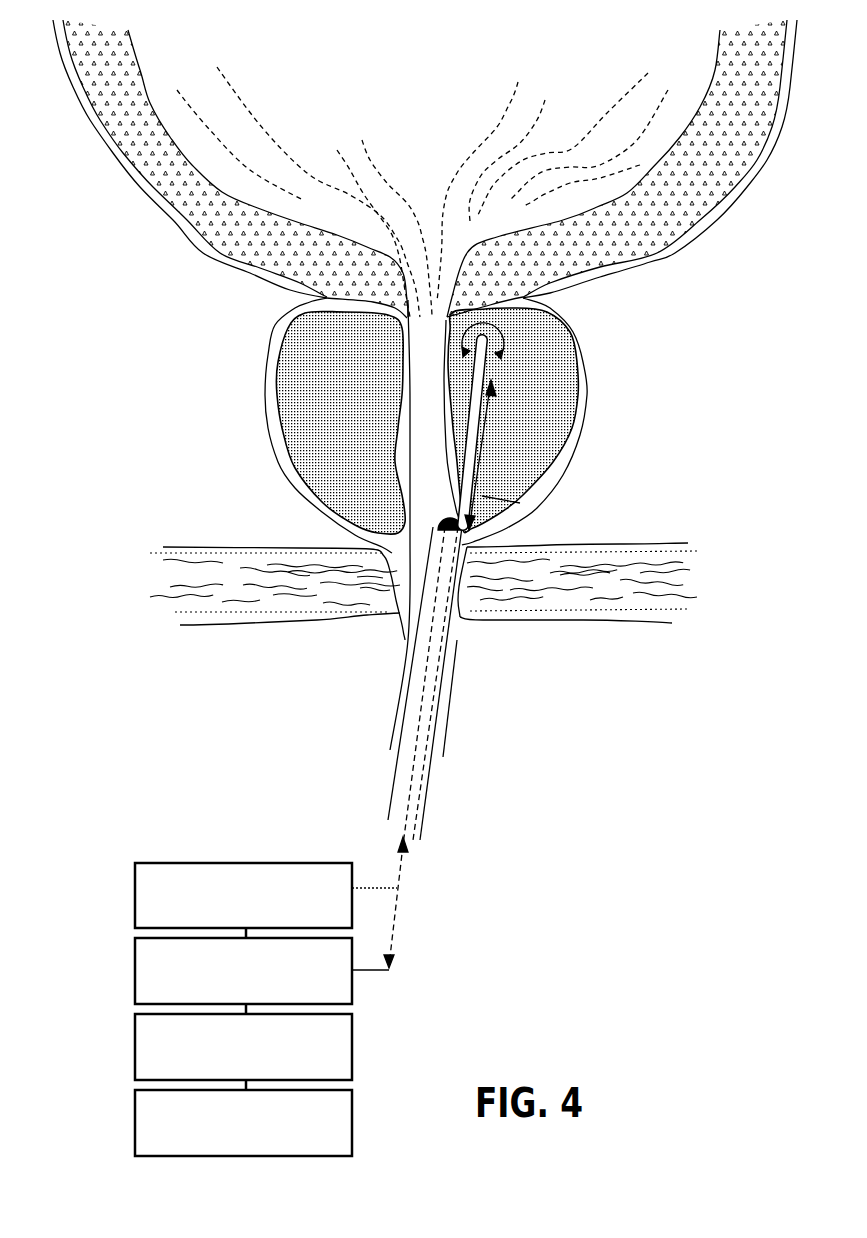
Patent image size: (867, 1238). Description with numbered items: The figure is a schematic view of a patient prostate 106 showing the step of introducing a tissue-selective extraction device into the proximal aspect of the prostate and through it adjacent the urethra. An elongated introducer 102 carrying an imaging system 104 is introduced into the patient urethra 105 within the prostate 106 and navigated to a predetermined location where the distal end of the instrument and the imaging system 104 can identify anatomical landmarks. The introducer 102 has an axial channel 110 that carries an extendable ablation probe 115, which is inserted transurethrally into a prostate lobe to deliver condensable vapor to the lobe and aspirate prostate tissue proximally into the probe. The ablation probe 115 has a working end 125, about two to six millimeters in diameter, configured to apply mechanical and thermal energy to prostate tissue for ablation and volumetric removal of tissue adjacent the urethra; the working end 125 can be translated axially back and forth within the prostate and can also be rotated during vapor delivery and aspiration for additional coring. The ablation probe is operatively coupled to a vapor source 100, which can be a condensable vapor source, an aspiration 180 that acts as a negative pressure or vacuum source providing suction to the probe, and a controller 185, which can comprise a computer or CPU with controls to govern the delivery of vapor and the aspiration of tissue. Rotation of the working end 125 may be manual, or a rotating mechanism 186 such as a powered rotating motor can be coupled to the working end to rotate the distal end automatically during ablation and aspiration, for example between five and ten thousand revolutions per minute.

The vapor source 100 is at (266, 895).
The elongated introducer 102 is at (398, 725).
The imaging system 104 is at (435, 522).
The patient urethra 105 is at (417, 360).
The prostate 106 is at (570, 313).
The axial channel 110 is at (428, 693).
The ablation probe 115 is at (520, 503).
The working end 125 is at (480, 367).
The aspiration 180 is at (262, 971).
The controller 185 is at (243, 1047).
The rotating mechanism 186 is at (243, 1123).